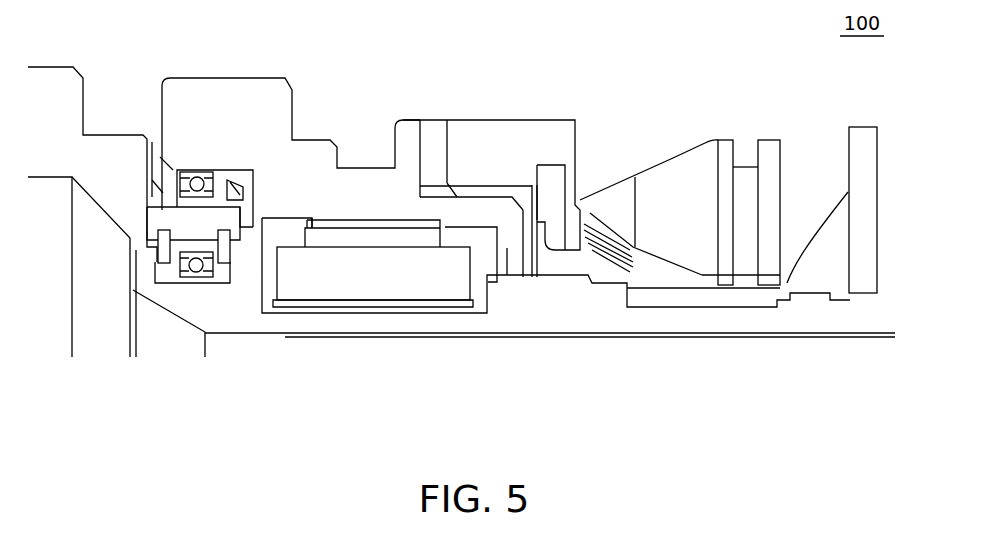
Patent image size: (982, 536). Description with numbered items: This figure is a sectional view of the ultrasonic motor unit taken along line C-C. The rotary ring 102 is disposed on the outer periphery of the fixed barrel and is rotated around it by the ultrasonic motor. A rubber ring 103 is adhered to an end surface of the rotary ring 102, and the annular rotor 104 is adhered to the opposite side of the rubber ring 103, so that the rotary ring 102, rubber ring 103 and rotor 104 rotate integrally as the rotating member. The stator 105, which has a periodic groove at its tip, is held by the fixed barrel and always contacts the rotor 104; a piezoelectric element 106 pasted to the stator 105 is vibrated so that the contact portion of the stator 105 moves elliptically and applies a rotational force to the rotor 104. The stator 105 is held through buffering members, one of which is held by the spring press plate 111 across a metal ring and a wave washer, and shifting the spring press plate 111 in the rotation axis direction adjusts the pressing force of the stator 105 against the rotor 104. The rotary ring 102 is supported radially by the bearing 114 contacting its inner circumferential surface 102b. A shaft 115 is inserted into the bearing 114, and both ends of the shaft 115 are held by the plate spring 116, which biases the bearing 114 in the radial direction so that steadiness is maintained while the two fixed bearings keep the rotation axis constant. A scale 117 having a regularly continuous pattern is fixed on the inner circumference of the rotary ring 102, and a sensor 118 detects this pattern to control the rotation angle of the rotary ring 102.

The rotary ring 102 is at (310, 140).
The inner circumferential surface 102b is at (223, 170).
The rubber ring 103 is at (440, 122).
The rotor 104 is at (533, 132).
The stator 105 is at (673, 158).
The piezoelectric element 106 is at (725, 148).
The spring press plate 111 is at (867, 200).
The bearing 114 is at (196, 170).
The shaft 115 is at (233, 283).
The plate spring 116 is at (165, 262).
The scale 117 is at (390, 227).
The sensor 118 is at (357, 293).